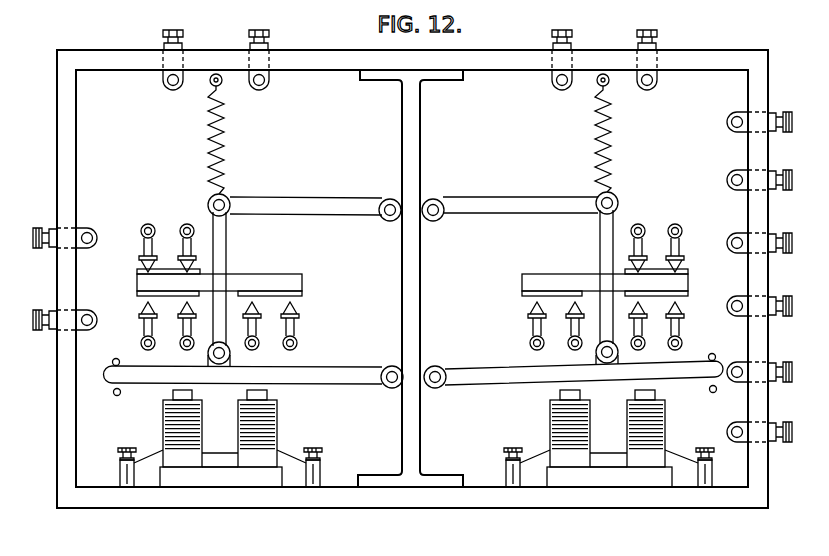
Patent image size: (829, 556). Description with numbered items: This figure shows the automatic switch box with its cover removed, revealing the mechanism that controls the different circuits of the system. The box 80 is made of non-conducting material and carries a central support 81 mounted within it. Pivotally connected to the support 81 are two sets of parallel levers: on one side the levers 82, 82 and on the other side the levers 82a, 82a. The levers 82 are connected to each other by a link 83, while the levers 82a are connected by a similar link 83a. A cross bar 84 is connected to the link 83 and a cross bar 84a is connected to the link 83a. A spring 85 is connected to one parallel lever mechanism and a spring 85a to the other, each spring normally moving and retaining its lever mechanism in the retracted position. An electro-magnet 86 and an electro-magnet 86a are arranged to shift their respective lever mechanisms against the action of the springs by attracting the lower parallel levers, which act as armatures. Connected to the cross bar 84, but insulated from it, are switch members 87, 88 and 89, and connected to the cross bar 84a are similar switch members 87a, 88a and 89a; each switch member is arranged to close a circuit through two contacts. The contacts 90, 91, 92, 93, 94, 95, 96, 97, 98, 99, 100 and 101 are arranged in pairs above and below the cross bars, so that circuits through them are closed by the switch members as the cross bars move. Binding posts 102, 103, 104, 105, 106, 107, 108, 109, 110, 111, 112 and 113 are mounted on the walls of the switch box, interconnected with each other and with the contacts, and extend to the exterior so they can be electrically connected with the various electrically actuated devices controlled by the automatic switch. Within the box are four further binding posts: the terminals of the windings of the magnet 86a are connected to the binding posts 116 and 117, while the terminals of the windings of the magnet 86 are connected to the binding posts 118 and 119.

The switch box 80 is at (413, 500).
The support 81 is at (420, 294).
The parallel levers 82 is at (512, 196).
The parallel levers 82a is at (321, 196).
The link 83 is at (598, 250).
The link 83a is at (228, 254).
The cross bar 84 is at (552, 274).
The cross bar 84a is at (278, 274).
The spring 85 is at (613, 150).
The spring 85a is at (226, 150).
The electro-magnet 86 is at (592, 424).
The electro-magnet 86a is at (221, 438).
The switch member 87 is at (688, 271).
The switch member 87a is at (137, 271).
The switch member 88 is at (688, 294).
The switch member 88a is at (137, 294).
The switch member 89 is at (524, 294).
The switch member 89a is at (302, 294).
The contact 90 is at (144, 242).
The contact 91 is at (183, 242).
The contact 92 is at (642, 242).
The contact 93 is at (679, 242).
The contact 94 is at (144, 327).
The contact 95 is at (183, 327).
The contact 96 is at (256, 327).
The contact 97 is at (294, 327).
The contact 98 is at (533, 327).
The contact 99 is at (571, 327).
The contact 100 is at (642, 327).
The contact 101 is at (679, 327).
The binding post 102 is at (59, 312).
The binding post 103 is at (59, 230).
The binding post 104 is at (173, 50).
The binding post 105 is at (259, 50).
The binding post 106 is at (562, 50).
The binding post 107 is at (647, 50).
The binding post 108 is at (768, 114).
The binding post 109 is at (767, 172).
The binding post 110 is at (768, 235).
The binding post 111 is at (767, 298).
The binding post 112 is at (767, 363).
The binding post 113 is at (767, 424).
The binding post 116 is at (139, 459).
The binding post 117 is at (301, 459).
The binding post 118 is at (526, 458).
The binding post 119 is at (690, 458).